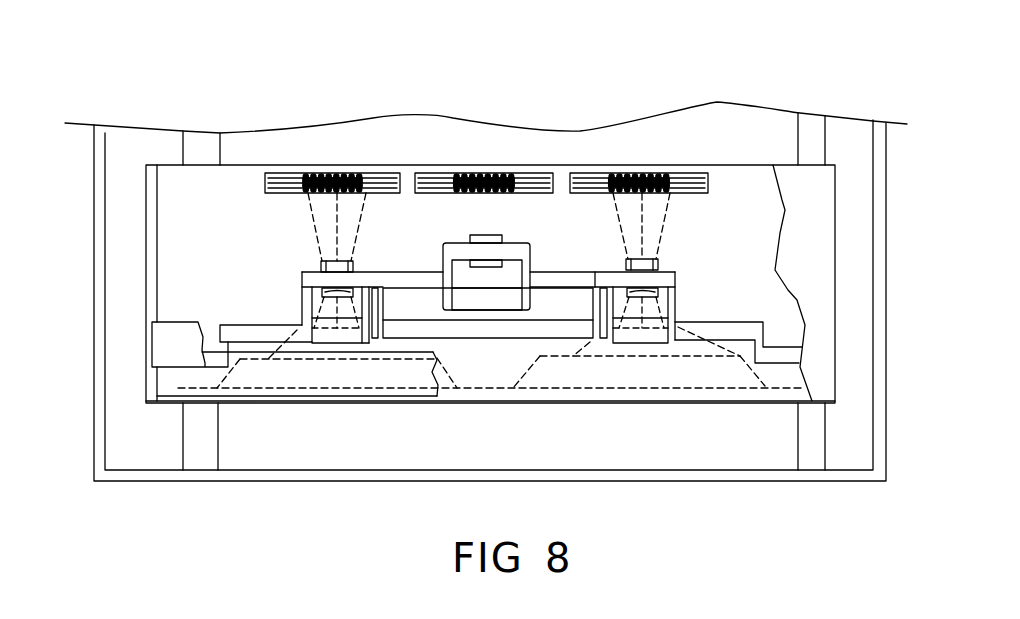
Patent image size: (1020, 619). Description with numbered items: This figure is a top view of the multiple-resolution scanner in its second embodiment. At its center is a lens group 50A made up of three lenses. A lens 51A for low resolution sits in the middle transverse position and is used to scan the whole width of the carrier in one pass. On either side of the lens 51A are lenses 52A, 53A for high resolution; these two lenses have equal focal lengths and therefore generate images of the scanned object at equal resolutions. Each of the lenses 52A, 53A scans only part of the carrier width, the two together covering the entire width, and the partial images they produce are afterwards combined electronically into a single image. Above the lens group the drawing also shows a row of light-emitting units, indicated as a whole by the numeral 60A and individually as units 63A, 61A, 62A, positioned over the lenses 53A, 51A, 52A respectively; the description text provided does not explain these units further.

The lens group 50A is at (292, 295).
The lens for a low resolution 51A is at (455, 288).
The lens for a high resolution 52A is at (661, 262).
The lens for a high resolution 53A is at (319, 264).
The light source unit 60A is at (259, 185).
The center lamp 61A is at (445, 170).
The right lamp 62A is at (640, 168).
The left lamp 63A is at (313, 168).